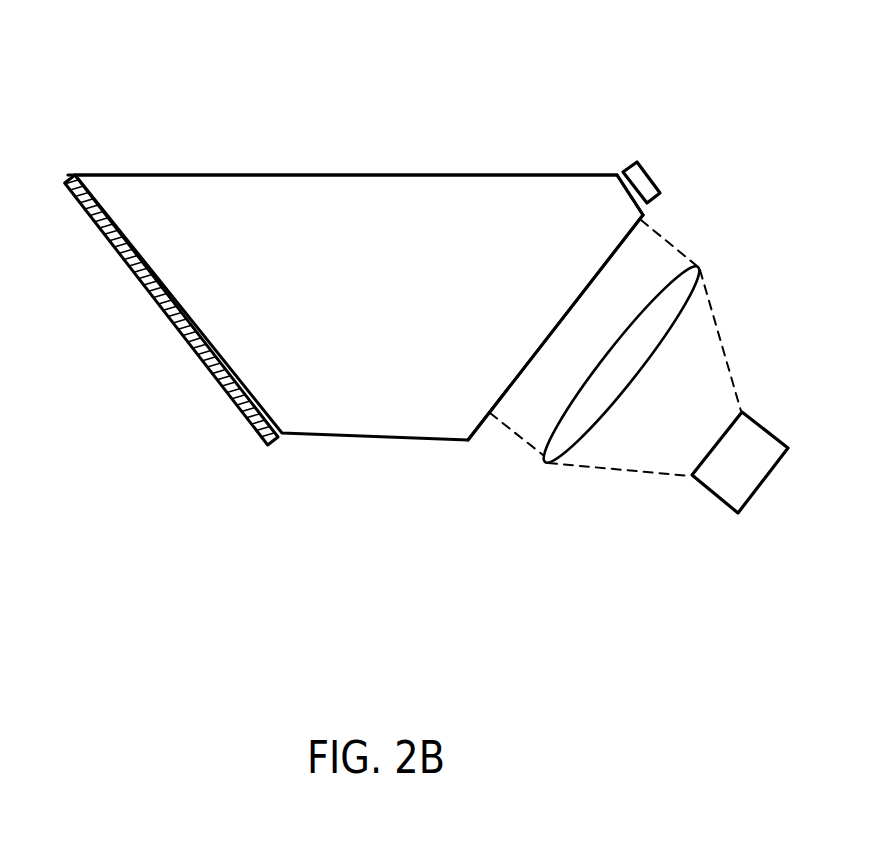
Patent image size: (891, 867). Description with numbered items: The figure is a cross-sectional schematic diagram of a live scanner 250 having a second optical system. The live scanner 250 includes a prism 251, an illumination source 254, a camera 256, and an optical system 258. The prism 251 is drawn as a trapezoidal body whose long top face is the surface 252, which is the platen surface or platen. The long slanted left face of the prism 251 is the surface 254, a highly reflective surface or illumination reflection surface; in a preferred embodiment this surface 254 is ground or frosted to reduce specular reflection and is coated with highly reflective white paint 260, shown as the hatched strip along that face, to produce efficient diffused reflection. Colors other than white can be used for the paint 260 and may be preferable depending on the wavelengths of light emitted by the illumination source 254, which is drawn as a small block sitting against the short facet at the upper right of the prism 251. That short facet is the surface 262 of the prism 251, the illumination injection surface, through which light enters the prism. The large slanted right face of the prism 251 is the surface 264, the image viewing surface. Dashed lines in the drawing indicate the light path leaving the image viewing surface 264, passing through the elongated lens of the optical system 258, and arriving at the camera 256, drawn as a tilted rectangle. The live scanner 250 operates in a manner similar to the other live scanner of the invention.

The live scanner 250 is at (603, 84).
The prism 251 is at (382, 320).
The platen surface 252 is at (293, 173).
The illumination source 254 is at (655, 178).
The camera 256 is at (767, 482).
The optical system 258 is at (698, 267).
The highly reflective white paint 260 is at (187, 338).
The illumination injection surface 262 is at (626, 197).
The image viewing surface 264 is at (548, 335).